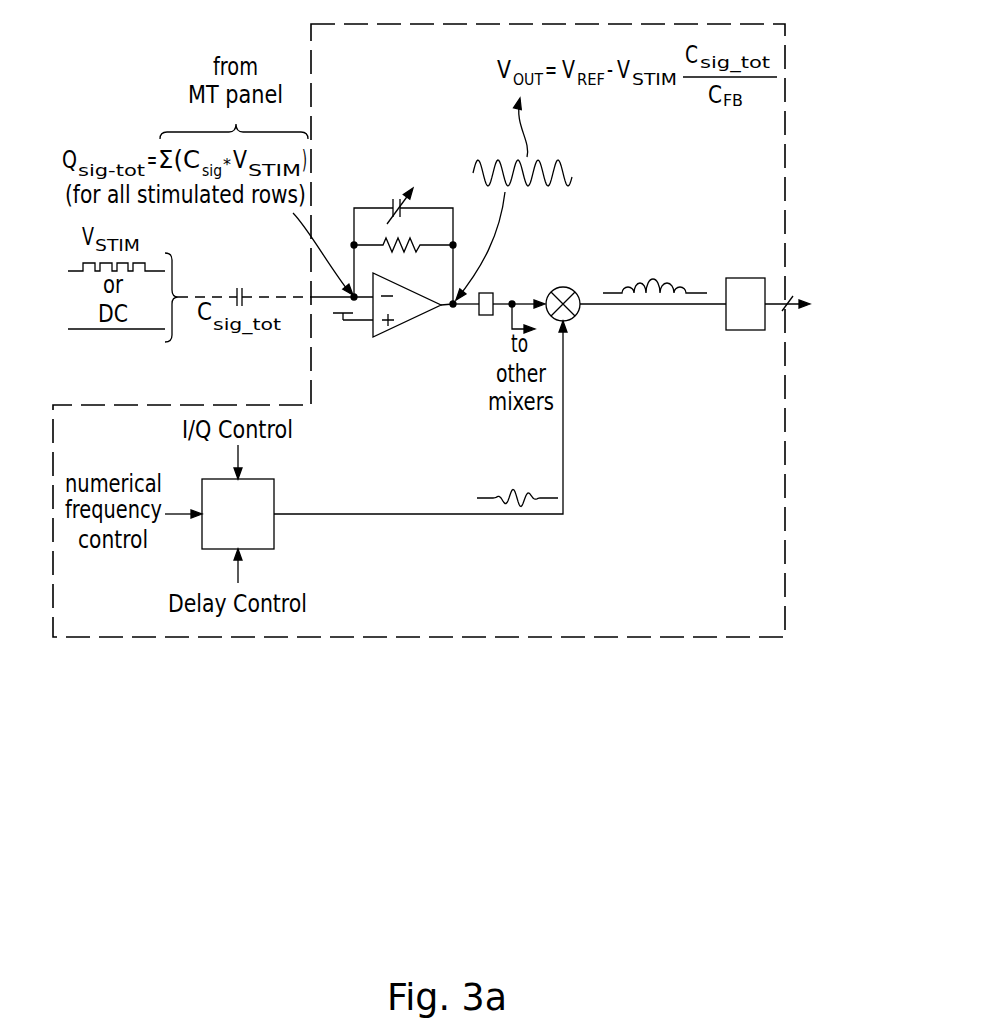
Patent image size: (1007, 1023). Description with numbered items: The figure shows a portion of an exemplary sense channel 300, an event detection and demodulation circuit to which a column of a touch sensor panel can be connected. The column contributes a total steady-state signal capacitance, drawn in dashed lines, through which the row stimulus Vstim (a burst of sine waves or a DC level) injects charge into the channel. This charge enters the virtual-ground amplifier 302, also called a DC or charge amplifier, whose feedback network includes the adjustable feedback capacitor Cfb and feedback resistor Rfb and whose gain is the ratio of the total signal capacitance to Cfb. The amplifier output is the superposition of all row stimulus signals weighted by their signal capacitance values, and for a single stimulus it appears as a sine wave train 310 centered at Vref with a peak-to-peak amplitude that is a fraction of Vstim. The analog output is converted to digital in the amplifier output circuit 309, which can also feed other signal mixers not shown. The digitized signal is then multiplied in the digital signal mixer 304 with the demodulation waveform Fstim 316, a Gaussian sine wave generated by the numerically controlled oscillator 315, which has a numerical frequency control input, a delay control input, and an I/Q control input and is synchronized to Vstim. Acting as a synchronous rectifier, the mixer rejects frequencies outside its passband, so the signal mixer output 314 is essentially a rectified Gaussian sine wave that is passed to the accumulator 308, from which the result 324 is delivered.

The sense channel 300 is at (786, 478).
The virtual-ground amplifier 302 is at (453, 385).
The signal mixer 304 is at (558, 260).
The accumulator 308 is at (740, 278).
The amplifier output circuit 309 is at (482, 317).
The sine wave train 310 is at (483, 163).
The signal mixer output 314 is at (655, 269).
The numerically controlled oscillator 315 is at (238, 514).
The demodulation waveform Fstim 316 is at (517, 465).
The result output 324 is at (812, 301).